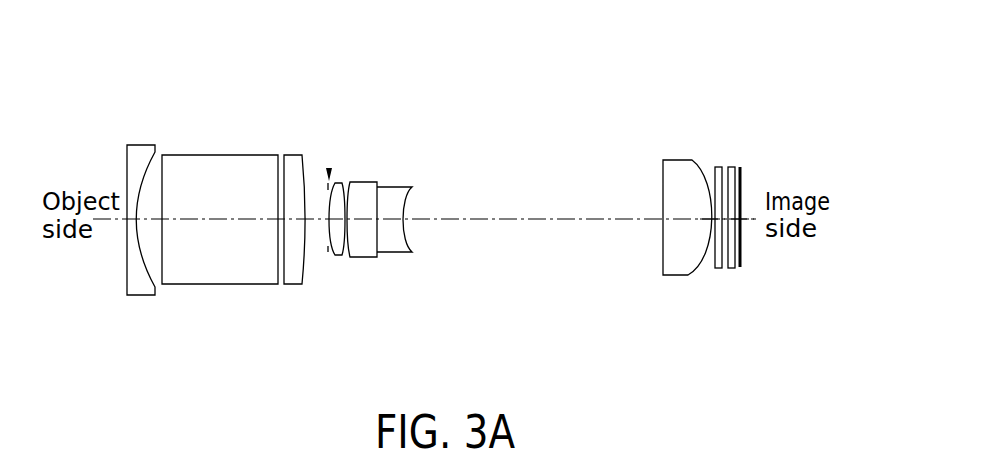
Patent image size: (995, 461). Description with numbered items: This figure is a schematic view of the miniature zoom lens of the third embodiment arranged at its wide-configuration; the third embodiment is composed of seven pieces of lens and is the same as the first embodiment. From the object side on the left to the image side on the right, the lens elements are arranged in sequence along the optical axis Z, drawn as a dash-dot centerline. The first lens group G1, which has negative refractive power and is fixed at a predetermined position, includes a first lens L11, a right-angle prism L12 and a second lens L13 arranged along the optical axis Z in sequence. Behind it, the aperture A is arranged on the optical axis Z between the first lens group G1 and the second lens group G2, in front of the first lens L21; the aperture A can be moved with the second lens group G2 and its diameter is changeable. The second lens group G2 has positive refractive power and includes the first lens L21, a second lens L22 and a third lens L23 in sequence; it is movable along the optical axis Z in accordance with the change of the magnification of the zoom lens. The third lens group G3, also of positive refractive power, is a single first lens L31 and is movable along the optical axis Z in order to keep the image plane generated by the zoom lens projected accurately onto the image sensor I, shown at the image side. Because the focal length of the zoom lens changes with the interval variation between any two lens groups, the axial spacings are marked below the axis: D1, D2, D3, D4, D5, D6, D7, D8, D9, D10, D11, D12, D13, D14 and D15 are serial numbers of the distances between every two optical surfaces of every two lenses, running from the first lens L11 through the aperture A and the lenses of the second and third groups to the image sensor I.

The first lens group G1 is at (282, 63).
The first lens L11 is at (138, 219).
The right-angle prism L12 is at (238, 168).
The second lens L13 is at (293, 219).
The aperture A is at (328, 168).
The second lens group G2 is at (422, 112).
The first lens L21 is at (337, 219).
The second lens L22 is at (365, 193).
The third lens L23 is at (397, 193).
The third lens group G3 is at (683, 81).
The first lens L31 is at (672, 167).
The image sensor I is at (745, 168).
The optical axis Z is at (758, 205).
The distance between optical surfaces D1 is at (130, 219).
The distance between optical surfaces D2 is at (150, 219).
The distance between optical surfaces D3 is at (215, 219).
The distance between optical surfaces D4 is at (281, 219).
The distance between optical surfaces D5 is at (293, 219).
The distance between optical surfaces D6 is at (311, 219).
The distance between optical surfaces D7 is at (331, 219).
The distance between optical surfaces D8 is at (340, 219).
The distance between optical surfaces D9 is at (347, 219).
The distance between optical surfaces D10 is at (362, 219).
The distance between optical surfaces D11 is at (388, 219).
The distance between optical surfaces D12 is at (408, 219).
The distance between optical surfaces D13 is at (583, 219).
The distance between optical surfaces D14 is at (680, 219).
The distance between optical surfaces D15 is at (714, 219).